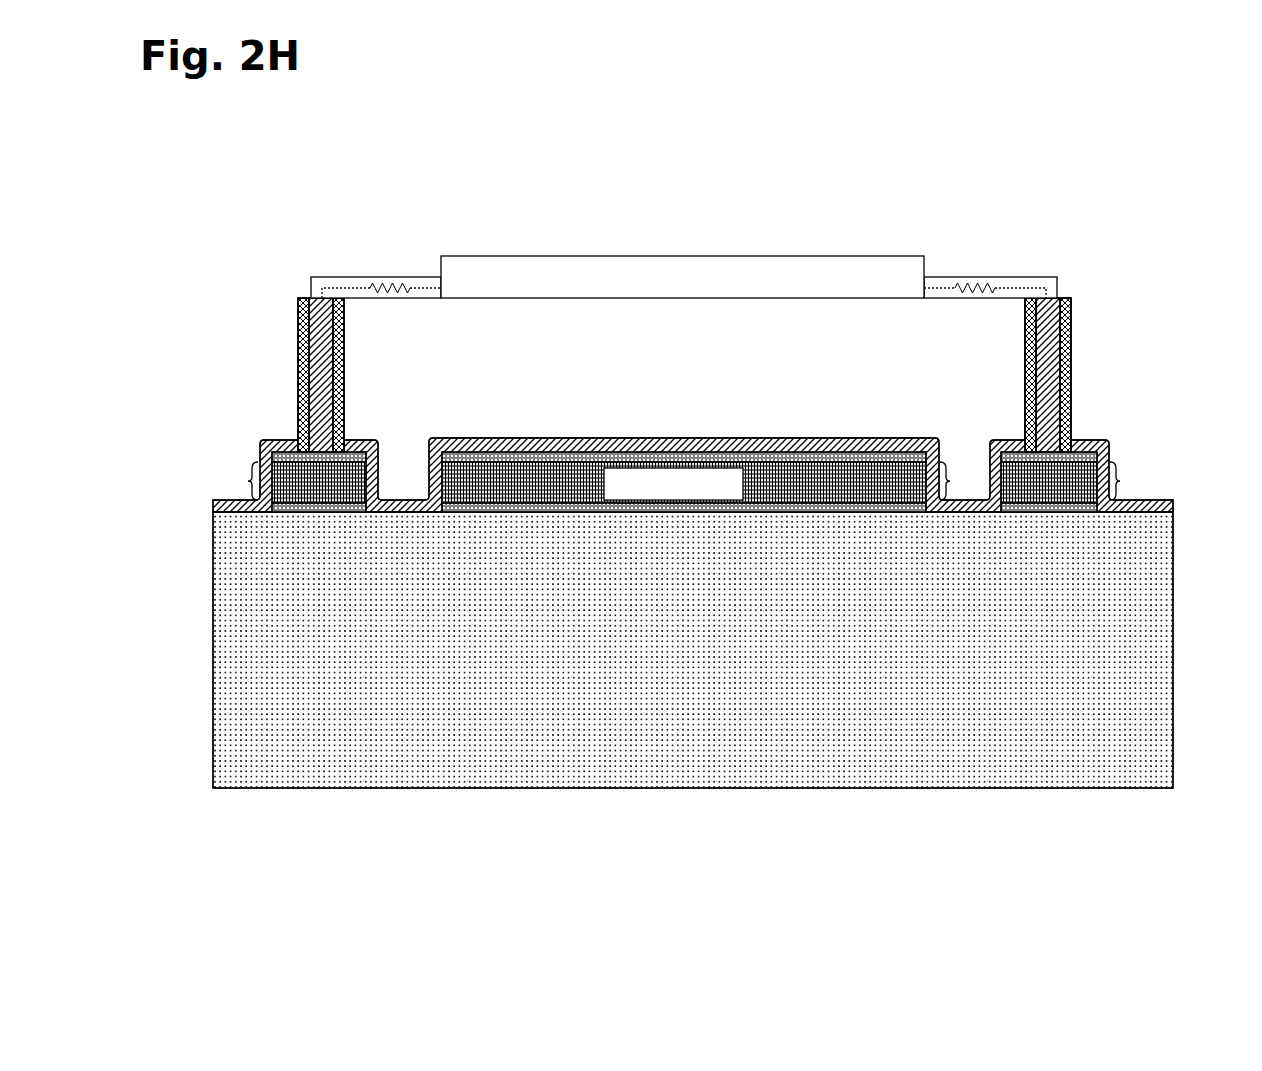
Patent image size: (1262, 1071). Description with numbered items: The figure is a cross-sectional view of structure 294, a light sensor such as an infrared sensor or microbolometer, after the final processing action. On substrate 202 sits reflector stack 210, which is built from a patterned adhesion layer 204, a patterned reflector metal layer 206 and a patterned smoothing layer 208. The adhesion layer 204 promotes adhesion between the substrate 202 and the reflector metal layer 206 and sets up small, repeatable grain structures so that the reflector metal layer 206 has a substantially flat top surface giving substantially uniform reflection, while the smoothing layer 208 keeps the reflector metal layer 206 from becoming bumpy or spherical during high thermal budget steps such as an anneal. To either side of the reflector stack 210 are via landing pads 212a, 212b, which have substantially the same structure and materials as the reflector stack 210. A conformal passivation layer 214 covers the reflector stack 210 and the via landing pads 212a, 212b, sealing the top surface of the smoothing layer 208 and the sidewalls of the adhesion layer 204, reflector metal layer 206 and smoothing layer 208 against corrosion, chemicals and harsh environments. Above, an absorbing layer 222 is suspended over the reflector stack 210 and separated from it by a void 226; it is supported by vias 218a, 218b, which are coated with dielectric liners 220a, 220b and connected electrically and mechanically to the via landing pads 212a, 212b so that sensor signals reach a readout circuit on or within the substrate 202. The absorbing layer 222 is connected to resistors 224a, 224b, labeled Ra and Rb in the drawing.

The structure 294 is at (1155, 116).
The substrate 202 is at (693, 650).
The adhesion layer 204 is at (520, 511).
The reflector metal layer 206 is at (673, 484).
The smoothing layer 208 is at (523, 458).
The reflector stack 210 is at (955, 470).
The via landing pad 212a is at (247, 482).
The via landing pad 212b is at (1127, 483).
The conformal passivation layer 214 is at (228, 508).
The via 218a is at (319, 388).
The via 218b is at (1049, 375).
The dielectric liner 220a is at (300, 420).
The dielectric liner 220b is at (1067, 415).
The absorbing layer 222 is at (682, 277).
The resistor 224a is at (376, 247).
The resistor 224b is at (990, 247).
The void 226 is at (684, 368).
The resistor Ra is at (390, 266).
The resistor Rb is at (973, 266).